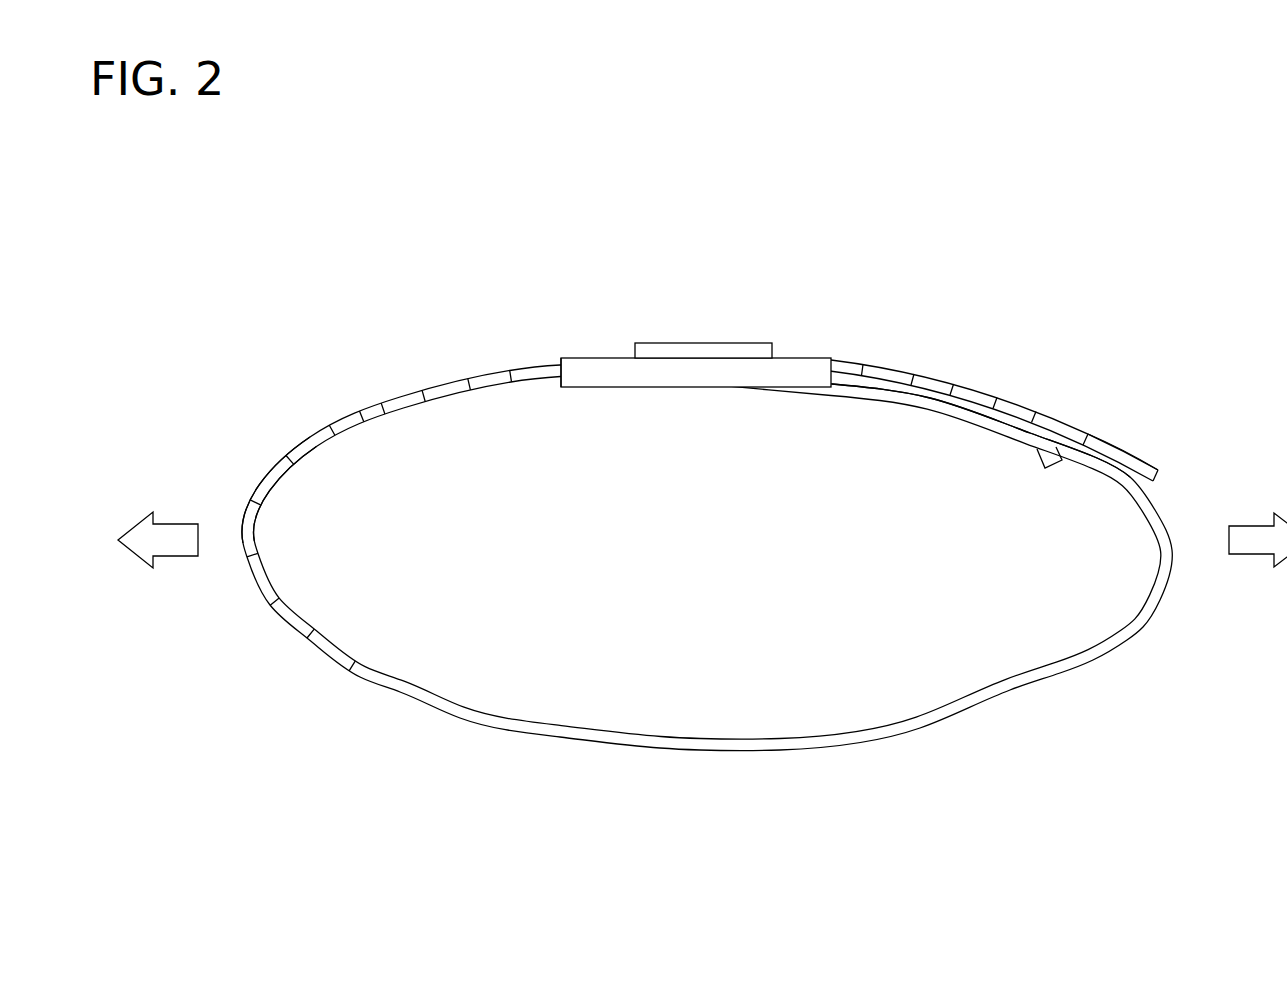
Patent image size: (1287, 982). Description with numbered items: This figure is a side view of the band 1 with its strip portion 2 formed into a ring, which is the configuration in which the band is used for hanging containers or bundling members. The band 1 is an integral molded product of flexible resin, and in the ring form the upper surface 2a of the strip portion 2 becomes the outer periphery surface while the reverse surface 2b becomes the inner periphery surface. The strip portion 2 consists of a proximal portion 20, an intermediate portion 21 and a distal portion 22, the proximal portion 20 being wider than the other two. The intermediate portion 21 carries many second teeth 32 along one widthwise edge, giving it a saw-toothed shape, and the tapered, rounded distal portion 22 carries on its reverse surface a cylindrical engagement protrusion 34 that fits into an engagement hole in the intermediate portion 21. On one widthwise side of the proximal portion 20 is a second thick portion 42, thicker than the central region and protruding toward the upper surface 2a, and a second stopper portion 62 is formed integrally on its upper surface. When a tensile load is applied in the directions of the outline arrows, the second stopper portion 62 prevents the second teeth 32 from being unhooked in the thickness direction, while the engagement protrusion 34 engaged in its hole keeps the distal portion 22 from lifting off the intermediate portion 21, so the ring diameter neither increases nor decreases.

The band 1 is at (438, 222).
The strip portion 2 is at (905, 364).
The upper surface 2a is at (972, 374).
The reverse surface 2b is at (883, 393).
The proximal portion 20 is at (803, 358).
The intermediate portion 21 is at (310, 437).
The distal portion 22 is at (1135, 457).
The second teeth 32 is at (362, 397).
The engagement protrusion 34 is at (1037, 467).
The second thick portion 42 is at (597, 367).
The second stopper portion 62 is at (698, 343).